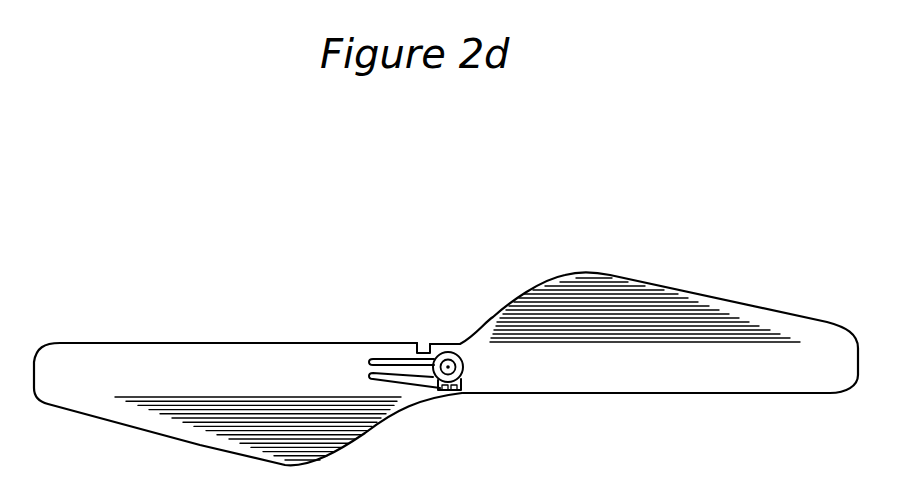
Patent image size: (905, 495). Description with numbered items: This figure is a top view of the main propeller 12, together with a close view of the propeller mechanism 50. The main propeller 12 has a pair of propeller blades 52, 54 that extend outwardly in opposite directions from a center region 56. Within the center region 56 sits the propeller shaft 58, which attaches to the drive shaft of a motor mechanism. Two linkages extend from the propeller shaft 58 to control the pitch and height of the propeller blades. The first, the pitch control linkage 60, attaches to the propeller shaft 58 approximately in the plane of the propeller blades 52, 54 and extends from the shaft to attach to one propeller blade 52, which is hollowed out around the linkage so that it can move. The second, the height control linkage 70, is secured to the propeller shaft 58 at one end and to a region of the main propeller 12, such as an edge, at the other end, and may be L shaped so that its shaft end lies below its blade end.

The main propeller 12 is at (581, 236).
The propeller blade 52 is at (153, 352).
The propeller blade 54 is at (733, 313).
The propeller mechanism 50 is at (438, 318).
The center region 56 is at (420, 354).
The propeller shaft 58 is at (452, 350).
The pitch control linkage 60 is at (388, 370).
The height control linkage 70 is at (462, 392).